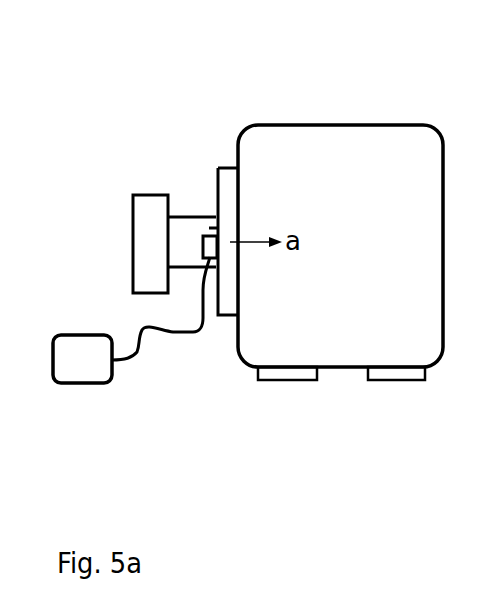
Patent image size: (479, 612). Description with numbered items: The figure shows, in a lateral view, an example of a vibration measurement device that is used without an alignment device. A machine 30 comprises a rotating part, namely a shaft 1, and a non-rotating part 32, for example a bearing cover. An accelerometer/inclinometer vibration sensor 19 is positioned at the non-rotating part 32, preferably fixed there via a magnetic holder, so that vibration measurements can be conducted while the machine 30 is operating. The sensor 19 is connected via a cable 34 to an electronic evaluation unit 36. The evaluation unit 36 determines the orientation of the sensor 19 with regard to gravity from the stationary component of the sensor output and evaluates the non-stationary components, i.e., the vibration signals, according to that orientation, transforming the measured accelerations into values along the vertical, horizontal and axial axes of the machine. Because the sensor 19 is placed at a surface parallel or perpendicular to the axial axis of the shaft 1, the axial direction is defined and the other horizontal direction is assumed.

The shaft 1 is at (175, 230).
The accelerometer/inclinometer vibration sensor 19 is at (207, 233).
The machine 30 is at (315, 100).
The non-rotating part 32 is at (227, 302).
The cable 34 is at (145, 337).
The electronic evaluation unit 36 is at (99, 373).